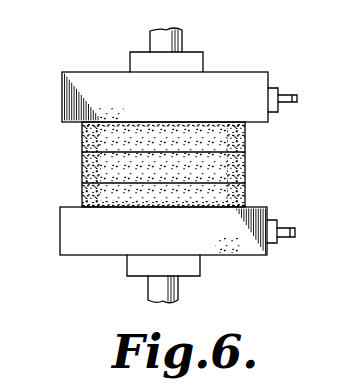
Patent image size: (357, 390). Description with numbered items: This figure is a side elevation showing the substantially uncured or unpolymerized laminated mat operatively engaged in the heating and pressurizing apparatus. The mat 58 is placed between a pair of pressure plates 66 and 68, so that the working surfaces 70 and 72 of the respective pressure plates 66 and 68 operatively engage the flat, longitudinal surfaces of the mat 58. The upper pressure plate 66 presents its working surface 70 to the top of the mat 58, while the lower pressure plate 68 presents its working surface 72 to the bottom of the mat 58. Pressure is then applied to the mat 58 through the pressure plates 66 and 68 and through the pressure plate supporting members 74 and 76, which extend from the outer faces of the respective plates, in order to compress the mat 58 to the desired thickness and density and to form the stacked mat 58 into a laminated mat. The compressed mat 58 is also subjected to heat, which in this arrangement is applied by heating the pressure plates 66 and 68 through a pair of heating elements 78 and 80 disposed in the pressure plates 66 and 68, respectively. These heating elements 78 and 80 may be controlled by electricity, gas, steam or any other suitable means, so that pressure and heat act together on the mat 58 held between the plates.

The mat 58 is at (172, 166).
The pressure plate 66 is at (70, 97).
The pressure plate 68 is at (70, 233).
The working surface 70 is at (246, 133).
The working surface 72 is at (75, 206).
The pressure plate supporting member 74 is at (183, 39).
The pressure plate supporting member 76 is at (157, 292).
The heating element 78 is at (273, 88).
The heating element 80 is at (272, 224).